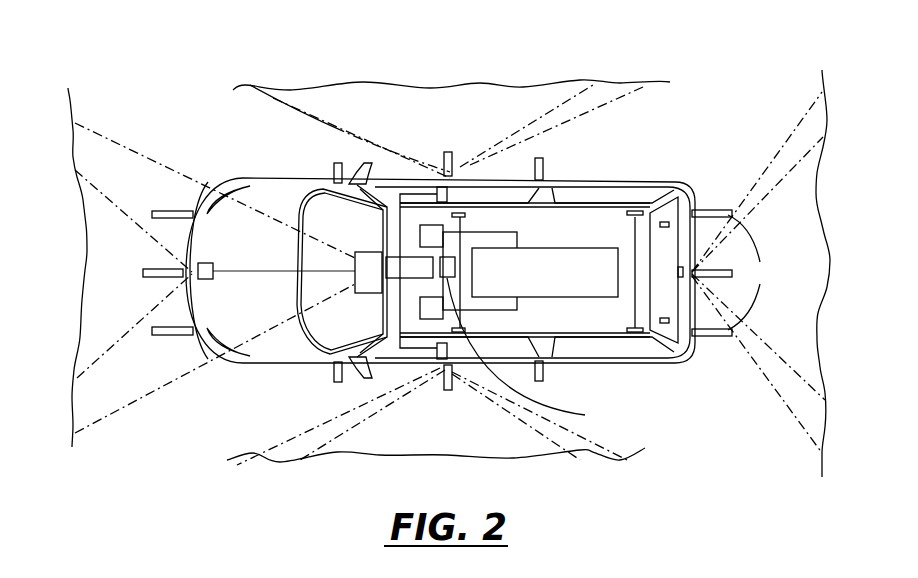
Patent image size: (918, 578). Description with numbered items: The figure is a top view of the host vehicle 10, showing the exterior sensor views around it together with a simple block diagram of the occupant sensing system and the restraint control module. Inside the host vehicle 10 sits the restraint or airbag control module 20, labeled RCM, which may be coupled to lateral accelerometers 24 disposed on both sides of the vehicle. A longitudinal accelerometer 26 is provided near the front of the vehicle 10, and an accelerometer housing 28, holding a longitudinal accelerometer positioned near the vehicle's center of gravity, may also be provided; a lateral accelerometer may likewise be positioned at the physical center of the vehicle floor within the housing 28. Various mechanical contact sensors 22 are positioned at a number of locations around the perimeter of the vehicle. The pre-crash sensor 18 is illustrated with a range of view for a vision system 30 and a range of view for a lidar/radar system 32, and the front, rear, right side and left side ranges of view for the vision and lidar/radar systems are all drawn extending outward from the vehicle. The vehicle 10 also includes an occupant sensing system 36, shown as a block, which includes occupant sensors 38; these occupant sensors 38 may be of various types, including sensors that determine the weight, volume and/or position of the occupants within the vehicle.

The host vehicle 10 is at (645, 180).
The pre-crash sensor 18 is at (368, 257).
The restraint control module 20 is at (412, 257).
The mechanical contact sensors 22 is at (172, 211).
The lateral accelerometers 24 is at (470, 172).
The longitudinal accelerometer 26 is at (203, 263).
The accelerometer housing 28 is at (527, 353).
The range of view for a vision system 30 is at (83, 137).
The range of view for a lidar/radar system 32 is at (83, 203).
The occupant sensing system 36 is at (577, 297).
The occupant sensors 38 is at (443, 231).